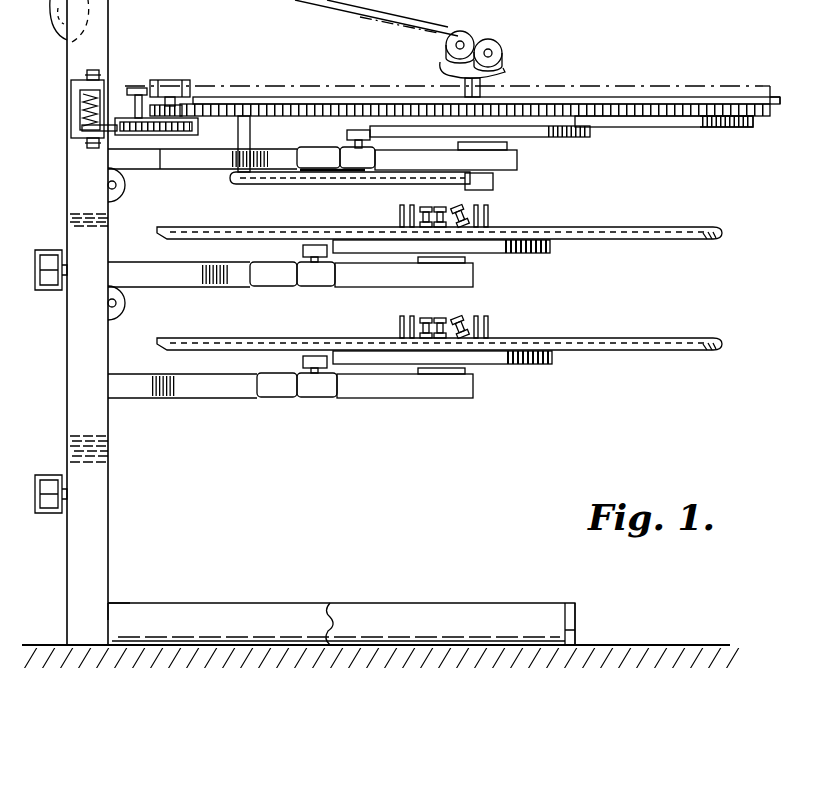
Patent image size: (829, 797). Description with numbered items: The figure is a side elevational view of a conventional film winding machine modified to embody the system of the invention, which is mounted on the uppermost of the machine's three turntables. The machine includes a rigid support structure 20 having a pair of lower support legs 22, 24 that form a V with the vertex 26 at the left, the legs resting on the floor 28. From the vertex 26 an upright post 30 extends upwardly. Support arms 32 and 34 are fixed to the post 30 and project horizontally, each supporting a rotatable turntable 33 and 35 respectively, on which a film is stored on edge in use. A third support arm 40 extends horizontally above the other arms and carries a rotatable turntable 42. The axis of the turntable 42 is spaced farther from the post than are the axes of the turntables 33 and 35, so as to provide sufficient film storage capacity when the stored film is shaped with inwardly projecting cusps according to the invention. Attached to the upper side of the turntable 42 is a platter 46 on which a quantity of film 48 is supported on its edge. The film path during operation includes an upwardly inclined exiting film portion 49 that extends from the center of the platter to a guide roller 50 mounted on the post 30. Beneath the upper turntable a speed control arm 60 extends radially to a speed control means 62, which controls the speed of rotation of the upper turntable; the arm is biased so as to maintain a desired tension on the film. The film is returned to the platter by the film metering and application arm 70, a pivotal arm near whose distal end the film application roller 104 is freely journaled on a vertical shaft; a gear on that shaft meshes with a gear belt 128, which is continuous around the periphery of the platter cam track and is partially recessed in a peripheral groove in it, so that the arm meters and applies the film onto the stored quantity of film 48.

The rigid support structure 20 is at (62, 316).
The lower support leg 22 is at (266, 600).
The lower support leg 24 is at (454, 606).
The vertex 26 is at (108, 603).
The floor 28 is at (660, 645).
The upright post 30 is at (80, 56).
The support arm 32 is at (330, 383).
The rotatable turntable 33 is at (439, 378).
The support arm 34 is at (470, 272).
The rotatable turntable 35 is at (682, 231).
The third support arm 40 is at (520, 158).
The rotatable turntable 42 is at (653, 120).
The platter 46 is at (708, 118).
The film 48 is at (607, 87).
The exiting film portion 49 is at (385, 8).
The guide roller 50 is at (97, 21).
The speed control arm 60 is at (325, 186).
The speed control means 62 is at (493, 183).
The film metering and application arm 70 is at (180, 140).
The film application roller 104 is at (175, 80).
The gear belt 128 is at (372, 105).